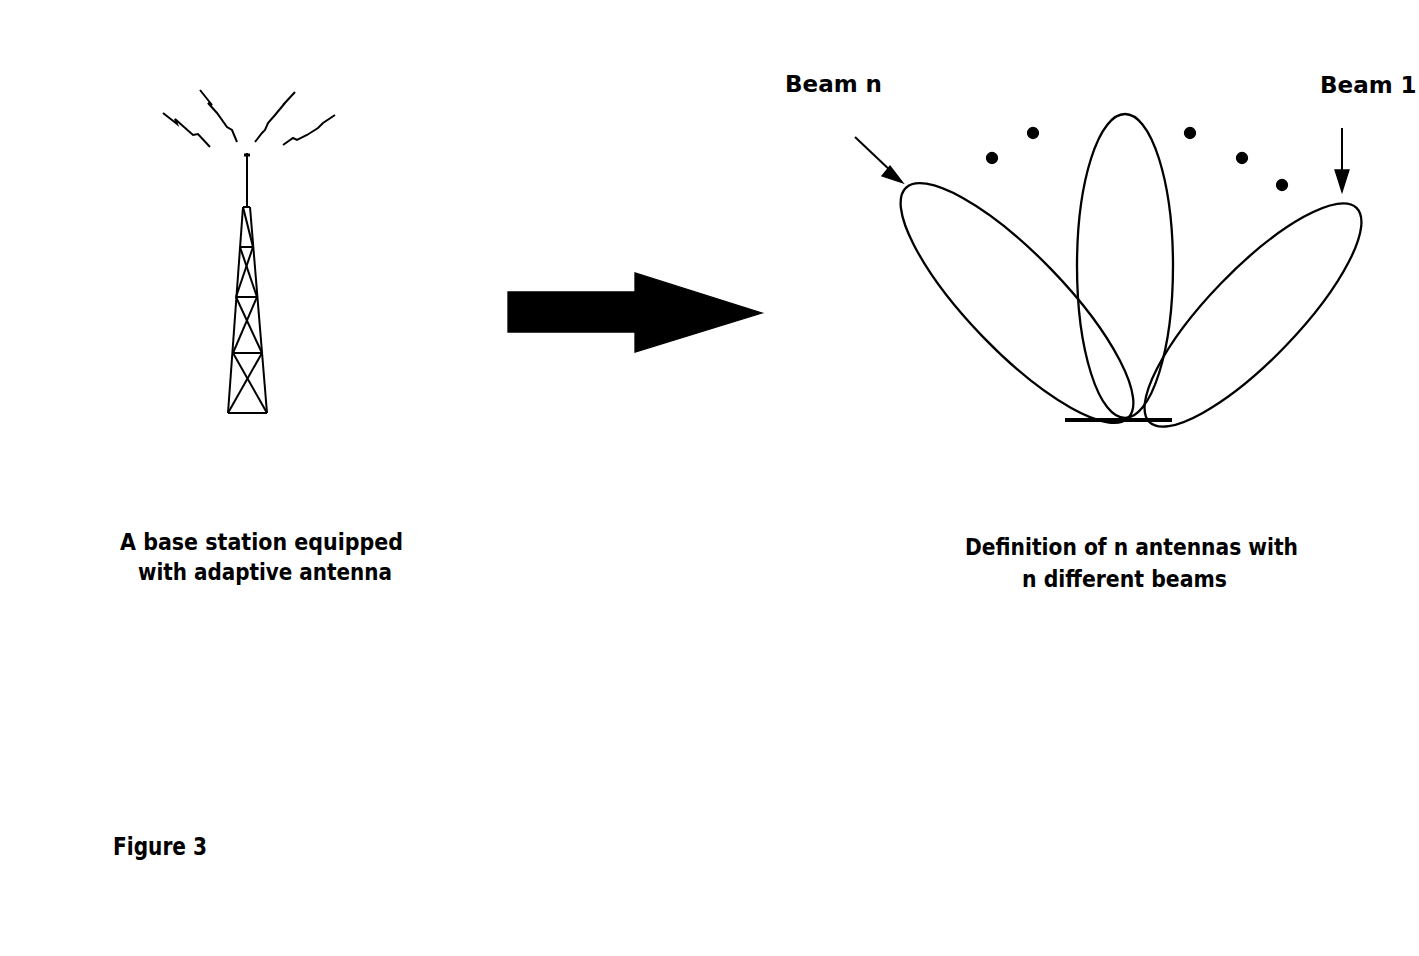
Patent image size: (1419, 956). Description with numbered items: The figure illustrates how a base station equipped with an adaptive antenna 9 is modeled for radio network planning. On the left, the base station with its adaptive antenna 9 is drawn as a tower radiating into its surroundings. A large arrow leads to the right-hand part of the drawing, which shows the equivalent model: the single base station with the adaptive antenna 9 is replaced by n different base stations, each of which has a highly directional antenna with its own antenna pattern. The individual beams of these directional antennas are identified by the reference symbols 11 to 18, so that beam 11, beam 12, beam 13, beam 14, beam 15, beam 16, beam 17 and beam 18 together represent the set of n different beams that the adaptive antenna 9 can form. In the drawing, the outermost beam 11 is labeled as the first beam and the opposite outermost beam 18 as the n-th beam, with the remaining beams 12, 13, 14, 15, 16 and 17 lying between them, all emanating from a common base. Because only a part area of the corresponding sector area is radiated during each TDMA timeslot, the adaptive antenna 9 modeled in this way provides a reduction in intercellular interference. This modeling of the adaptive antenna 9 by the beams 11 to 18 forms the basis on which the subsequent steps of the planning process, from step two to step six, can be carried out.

The adaptive antenna 9 is at (270, 262).
The beam 11 is at (1355, 283).
The beam 12 is at (1275, 165).
The beam 13 is at (1235, 140).
The beam 14 is at (1183, 115).
The beam 15 is at (1118, 100).
The beam 16 is at (1025, 110).
The beam 17 is at (972, 137).
The beam 18 is at (893, 211).